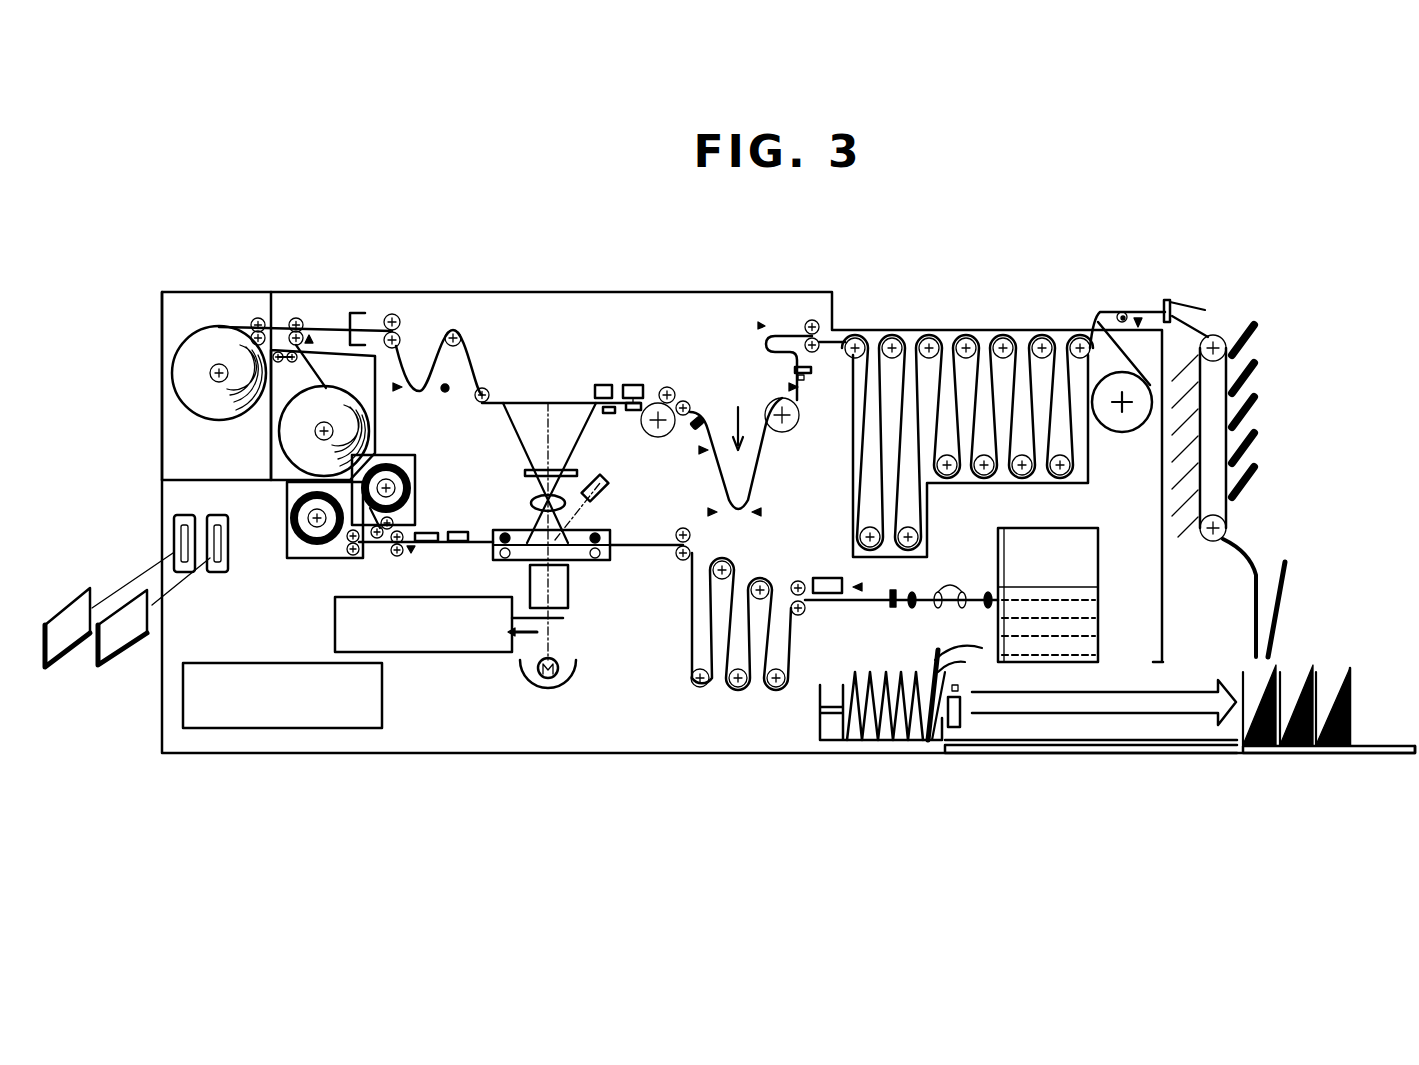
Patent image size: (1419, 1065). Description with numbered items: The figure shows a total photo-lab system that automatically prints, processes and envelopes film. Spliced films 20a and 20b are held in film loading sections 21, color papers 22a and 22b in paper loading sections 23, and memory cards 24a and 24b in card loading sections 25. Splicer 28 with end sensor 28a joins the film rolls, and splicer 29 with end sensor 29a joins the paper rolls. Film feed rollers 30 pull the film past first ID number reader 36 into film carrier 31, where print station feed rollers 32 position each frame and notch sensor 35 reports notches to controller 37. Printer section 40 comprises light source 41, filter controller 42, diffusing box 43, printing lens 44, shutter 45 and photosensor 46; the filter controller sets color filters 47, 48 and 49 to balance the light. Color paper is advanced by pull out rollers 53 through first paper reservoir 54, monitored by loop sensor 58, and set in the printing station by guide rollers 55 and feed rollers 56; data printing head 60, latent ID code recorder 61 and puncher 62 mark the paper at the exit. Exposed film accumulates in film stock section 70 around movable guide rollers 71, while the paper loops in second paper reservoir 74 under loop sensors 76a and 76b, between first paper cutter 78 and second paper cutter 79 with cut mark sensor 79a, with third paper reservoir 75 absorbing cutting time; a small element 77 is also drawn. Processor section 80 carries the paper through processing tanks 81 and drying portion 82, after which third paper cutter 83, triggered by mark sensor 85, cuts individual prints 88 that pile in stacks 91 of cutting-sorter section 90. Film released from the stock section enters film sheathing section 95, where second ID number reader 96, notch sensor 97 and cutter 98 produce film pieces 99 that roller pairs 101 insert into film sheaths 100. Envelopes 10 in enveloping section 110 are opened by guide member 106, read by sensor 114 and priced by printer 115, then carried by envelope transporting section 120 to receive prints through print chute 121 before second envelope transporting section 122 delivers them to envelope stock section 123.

The envelope 10 is at (1247, 690).
The spliced film 20a is at (302, 510).
The spliced film 20b is at (415, 465).
The film loading sections 21 is at (287, 541).
The color paper 22a is at (207, 336).
The color paper 22b is at (320, 388).
The paper loading sections 23 is at (160, 368).
The LSI memory card 24a is at (68, 605).
The LSI memory card 24b is at (130, 650).
The card loading sections 25 is at (172, 527).
The splicer 28 is at (435, 548).
The end sensor 28a is at (412, 556).
The splicer 29 is at (358, 312).
The end sensor 29a is at (309, 332).
The film feed rollers 30 is at (395, 556).
The film carrier 31 is at (593, 533).
The print station feed rollers 32 is at (502, 560).
The notch sensor 35 is at (525, 540).
The first ID number reader 36 is at (457, 530).
The controller 37 is at (385, 700).
The printer section 40 is at (488, 662).
The light source 41 is at (567, 688).
The filter controller 42 is at (333, 622).
The diffusing box 43 is at (572, 592).
The printing lens 44 is at (534, 502).
The shutter 45 is at (580, 474).
The photosensor 46 is at (608, 482).
The color filter 47 is at (563, 618).
The color filter 48 is at (537, 632).
The color filter 49 is at (530, 648).
The pull out rollers 53 is at (275, 320).
The first paper reservoir 54 is at (423, 330).
The guide rollers 55 is at (490, 393).
The feed rollers 56 is at (664, 438).
The loop sensor 58 is at (447, 392).
The data printing head 60 is at (602, 385).
The latent ID code recorder 61 is at (610, 414).
The puncher 62 is at (634, 385).
The film stock section 70 is at (722, 740).
The guide rollers 71 is at (757, 580).
The second paper reservoir 74 is at (744, 444).
The third paper reservoir 75 is at (787, 320).
The loop sensor 76a is at (770, 452).
The loop sensor 76b is at (760, 510).
The film sensor 77 is at (756, 326).
The first paper cutter 78 is at (698, 418).
The second paper cutter 79 is at (812, 374).
The cut mark sensor 79a is at (808, 396).
The processor section 80 is at (937, 330).
The processing tanks 81 is at (973, 487).
The drying portion 82 is at (1122, 434).
The third paper cutter 83 is at (1173, 298).
The mark sensor 85 is at (1130, 308).
The individual prints 88 is at (1243, 326).
The cutting-sorter section 90 is at (1239, 383).
The stack 91 is at (1257, 330).
The film sheathing section 95 is at (850, 570).
The second ID number reader 96 is at (813, 578).
The notch sensor 97 is at (869, 573).
The cutter 98 is at (895, 590).
The film pieces 99 is at (1100, 650).
The film sheaths 100 is at (1068, 530).
The roller pairs 101 is at (955, 588).
The guide member 106 is at (962, 660).
The enveloping section 110 is at (872, 745).
The sensor 114 is at (962, 700).
The printer 115 is at (957, 748).
The envelope transporting section 120 is at (1073, 755).
The print chute 121 is at (1260, 618).
The second envelope transporting section 122 is at (1290, 756).
The envelope stock section 123 is at (1355, 655).